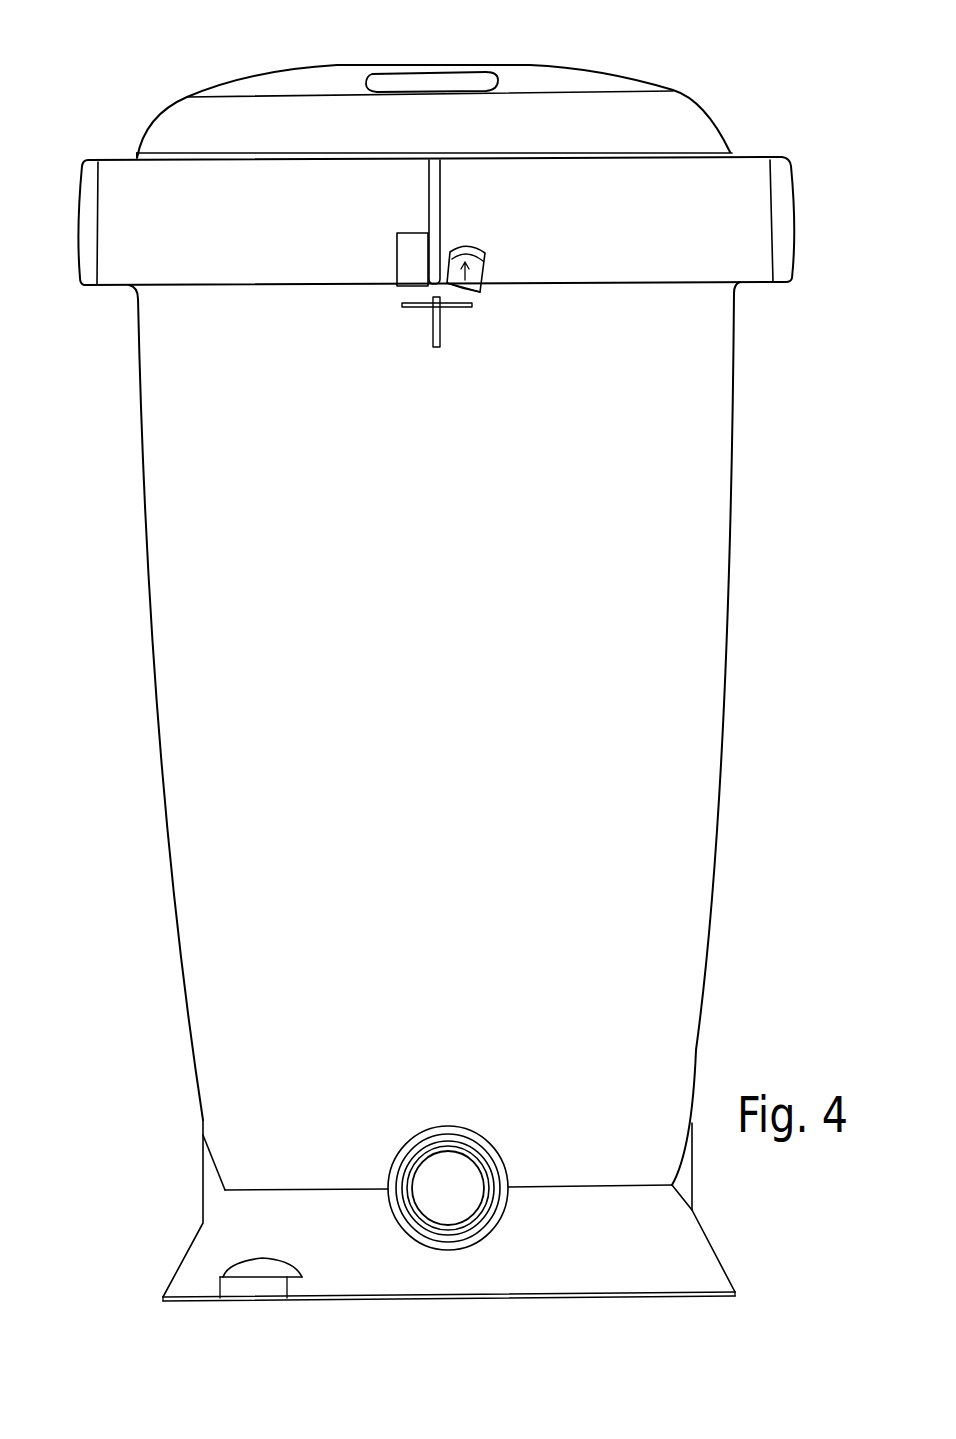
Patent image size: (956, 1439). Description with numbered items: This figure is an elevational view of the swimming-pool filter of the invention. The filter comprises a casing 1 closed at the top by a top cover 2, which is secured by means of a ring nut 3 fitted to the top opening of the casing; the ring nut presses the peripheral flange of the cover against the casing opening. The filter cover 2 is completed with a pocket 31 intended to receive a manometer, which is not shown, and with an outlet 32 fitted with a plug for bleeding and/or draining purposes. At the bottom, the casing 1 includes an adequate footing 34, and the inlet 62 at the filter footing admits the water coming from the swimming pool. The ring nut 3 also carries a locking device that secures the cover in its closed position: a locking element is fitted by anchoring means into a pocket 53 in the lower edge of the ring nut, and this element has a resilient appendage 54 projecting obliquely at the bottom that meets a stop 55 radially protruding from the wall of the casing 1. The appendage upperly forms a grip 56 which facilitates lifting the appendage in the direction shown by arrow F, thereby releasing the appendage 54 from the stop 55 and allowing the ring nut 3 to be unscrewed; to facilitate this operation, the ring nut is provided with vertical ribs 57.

The casing 1 is at (670, 793).
The top cover 2 is at (680, 118).
The ring nut 3 is at (697, 198).
The pocket 31 is at (448, 80).
The outlet 32 is at (782, 202).
The footing 34 is at (377, 1263).
The pocket 53 is at (407, 262).
The resilient appendage 54 is at (480, 292).
The stop 55 is at (432, 309).
The grip 56 is at (470, 245).
The vertical ribs 57 is at (437, 187).
The inlet 62 is at (457, 1198).
The arrow F is at (468, 277).